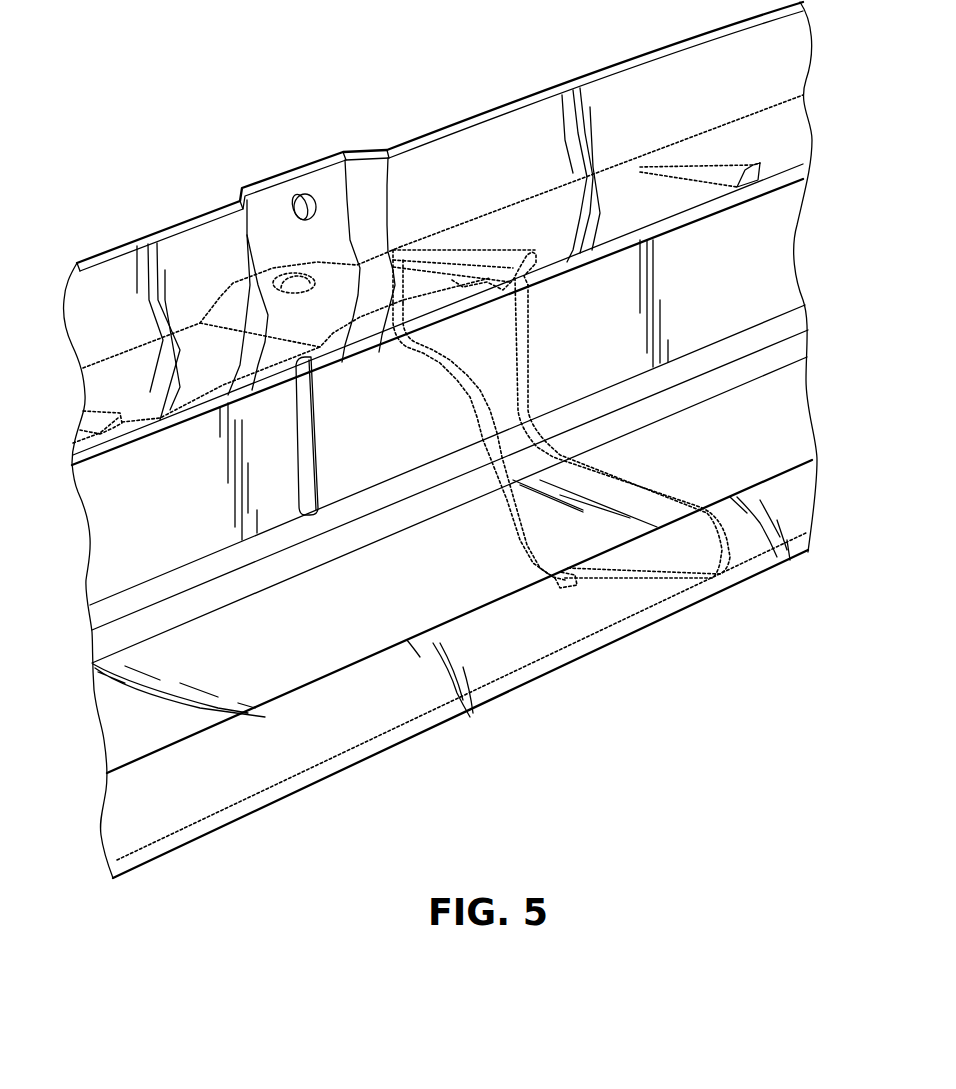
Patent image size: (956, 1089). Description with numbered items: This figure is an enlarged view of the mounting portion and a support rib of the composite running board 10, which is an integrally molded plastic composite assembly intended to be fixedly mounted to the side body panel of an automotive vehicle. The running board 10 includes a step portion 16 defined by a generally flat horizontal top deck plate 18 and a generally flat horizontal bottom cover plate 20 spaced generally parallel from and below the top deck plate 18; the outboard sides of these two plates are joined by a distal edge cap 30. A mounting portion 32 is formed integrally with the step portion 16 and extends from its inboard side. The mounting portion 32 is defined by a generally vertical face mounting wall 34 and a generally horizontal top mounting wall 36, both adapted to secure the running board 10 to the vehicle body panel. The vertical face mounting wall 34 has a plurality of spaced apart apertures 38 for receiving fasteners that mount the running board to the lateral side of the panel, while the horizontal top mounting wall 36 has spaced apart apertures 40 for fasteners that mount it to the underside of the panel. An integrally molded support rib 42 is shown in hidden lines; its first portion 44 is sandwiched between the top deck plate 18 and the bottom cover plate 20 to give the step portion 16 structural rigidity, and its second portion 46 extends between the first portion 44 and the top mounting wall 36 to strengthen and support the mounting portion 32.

The composite running board 10 is at (567, 727).
The step portion 16 is at (141, 747).
The top deck plate 18 is at (452, 565).
The bottom cover plate 20 is at (191, 847).
The distal edge cap 30 is at (291, 762).
The mounting portion 32 is at (456, 117).
The vertical face mounting wall 34 is at (368, 254).
The horizontal top mounting wall 36 is at (437, 317).
The apertures 38 is at (302, 195).
The apertures 40 is at (287, 277).
The support ribs 42 is at (610, 472).
The first portion 44 is at (585, 511).
The second portion 46 is at (430, 441).